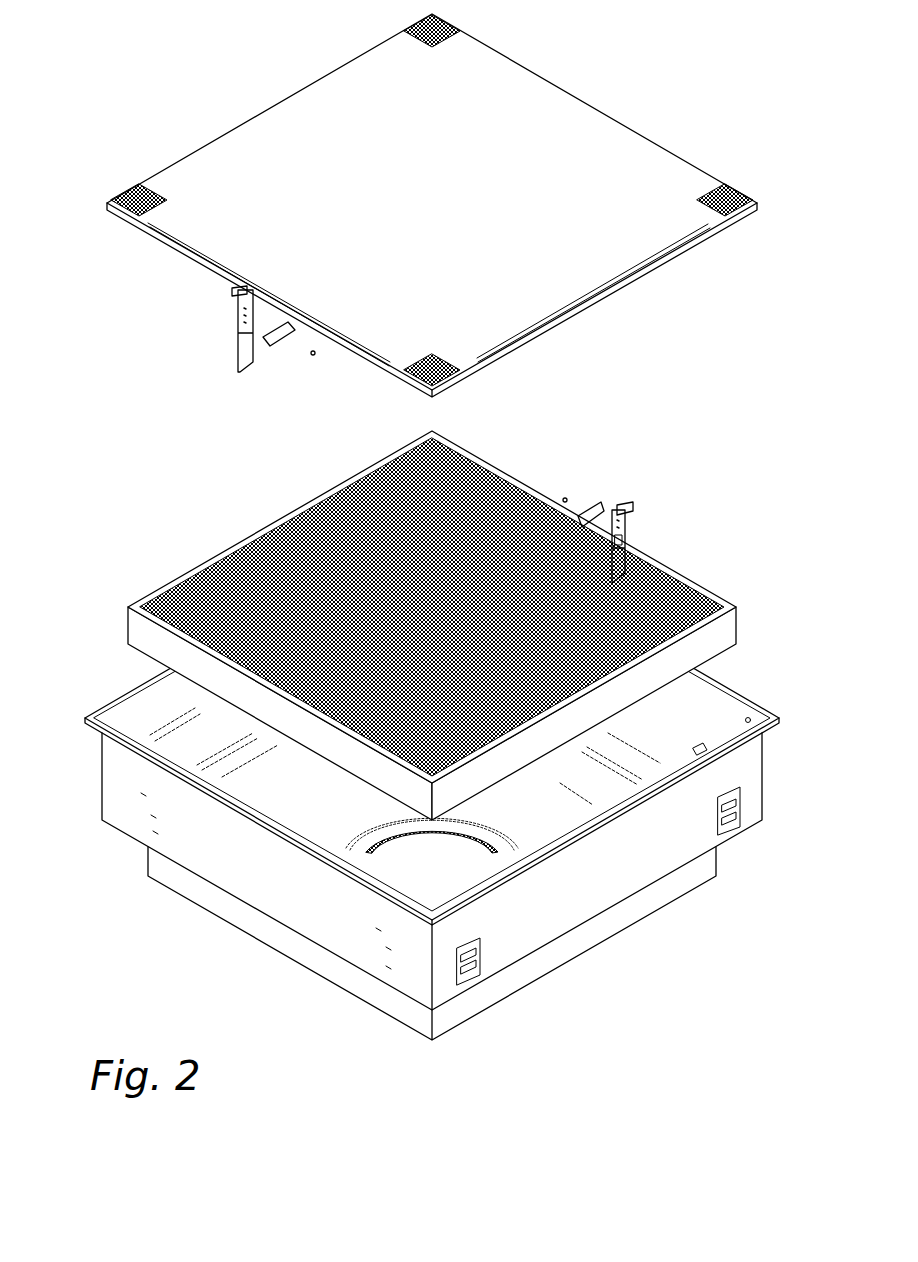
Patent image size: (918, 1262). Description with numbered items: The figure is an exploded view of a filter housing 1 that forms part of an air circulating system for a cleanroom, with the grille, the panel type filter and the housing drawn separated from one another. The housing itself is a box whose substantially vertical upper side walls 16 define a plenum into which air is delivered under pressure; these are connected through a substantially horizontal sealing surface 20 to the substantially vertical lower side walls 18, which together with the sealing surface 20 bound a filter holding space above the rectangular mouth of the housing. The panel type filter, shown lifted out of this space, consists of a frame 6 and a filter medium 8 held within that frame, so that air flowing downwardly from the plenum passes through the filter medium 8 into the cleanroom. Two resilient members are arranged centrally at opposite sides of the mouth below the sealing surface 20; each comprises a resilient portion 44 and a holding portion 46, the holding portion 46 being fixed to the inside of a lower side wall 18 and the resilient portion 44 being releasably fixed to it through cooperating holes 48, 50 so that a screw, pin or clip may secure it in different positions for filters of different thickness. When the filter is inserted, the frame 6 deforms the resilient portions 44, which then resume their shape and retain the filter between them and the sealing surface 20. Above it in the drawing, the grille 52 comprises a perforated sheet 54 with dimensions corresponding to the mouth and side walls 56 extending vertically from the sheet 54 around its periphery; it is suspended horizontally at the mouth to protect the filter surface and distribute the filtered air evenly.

The filter housing 1 is at (416, 778).
The frame 6 is at (389, 625).
The filter medium 8 is at (340, 556).
The side wall 16 is at (148, 851).
The lower side wall 18 is at (102, 773).
The sealing surface 20 is at (242, 745).
The resilient portion 44 is at (285, 348).
The holding portion 46 is at (242, 342).
The hole in resilient portion 48 is at (604, 513).
The hole in holding portion 50 is at (622, 538).
The grille 52 is at (432, 205).
The perforated sheet 54 is at (302, 124).
The grille side wall 56 is at (588, 306).